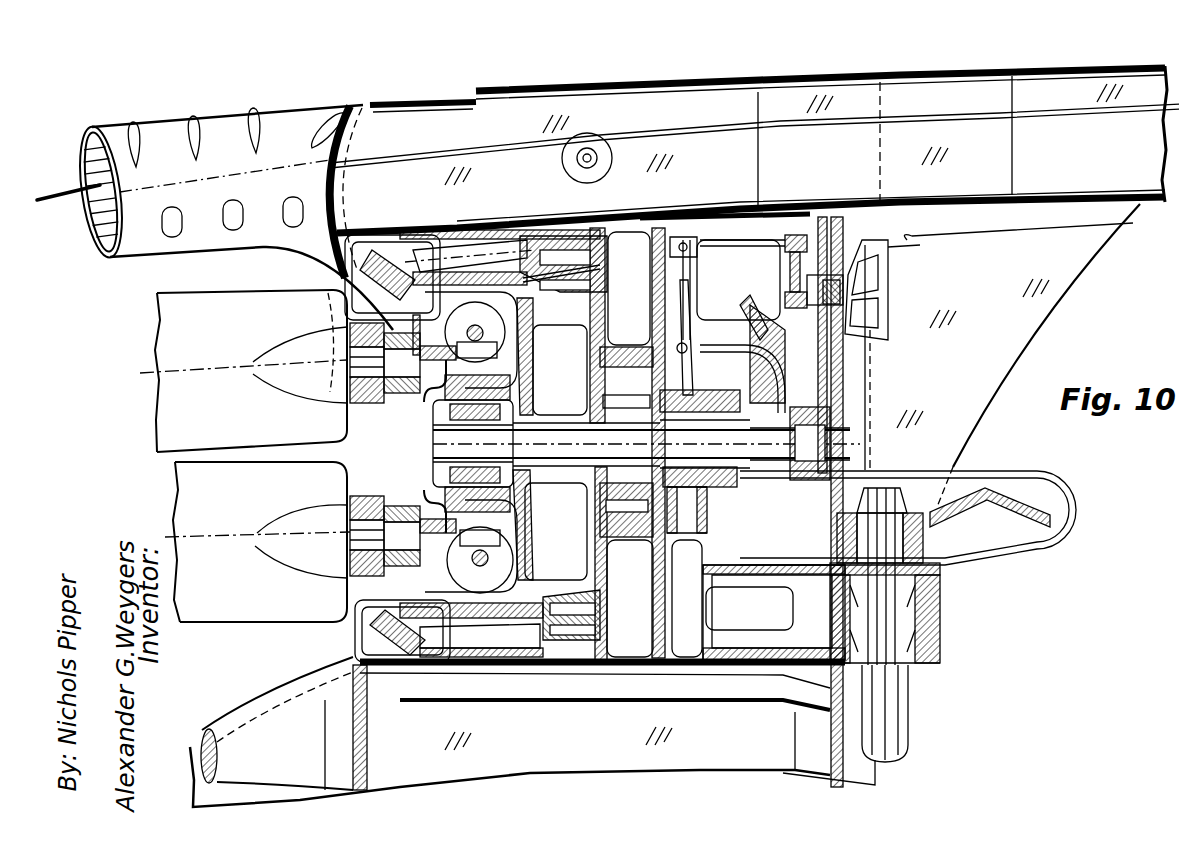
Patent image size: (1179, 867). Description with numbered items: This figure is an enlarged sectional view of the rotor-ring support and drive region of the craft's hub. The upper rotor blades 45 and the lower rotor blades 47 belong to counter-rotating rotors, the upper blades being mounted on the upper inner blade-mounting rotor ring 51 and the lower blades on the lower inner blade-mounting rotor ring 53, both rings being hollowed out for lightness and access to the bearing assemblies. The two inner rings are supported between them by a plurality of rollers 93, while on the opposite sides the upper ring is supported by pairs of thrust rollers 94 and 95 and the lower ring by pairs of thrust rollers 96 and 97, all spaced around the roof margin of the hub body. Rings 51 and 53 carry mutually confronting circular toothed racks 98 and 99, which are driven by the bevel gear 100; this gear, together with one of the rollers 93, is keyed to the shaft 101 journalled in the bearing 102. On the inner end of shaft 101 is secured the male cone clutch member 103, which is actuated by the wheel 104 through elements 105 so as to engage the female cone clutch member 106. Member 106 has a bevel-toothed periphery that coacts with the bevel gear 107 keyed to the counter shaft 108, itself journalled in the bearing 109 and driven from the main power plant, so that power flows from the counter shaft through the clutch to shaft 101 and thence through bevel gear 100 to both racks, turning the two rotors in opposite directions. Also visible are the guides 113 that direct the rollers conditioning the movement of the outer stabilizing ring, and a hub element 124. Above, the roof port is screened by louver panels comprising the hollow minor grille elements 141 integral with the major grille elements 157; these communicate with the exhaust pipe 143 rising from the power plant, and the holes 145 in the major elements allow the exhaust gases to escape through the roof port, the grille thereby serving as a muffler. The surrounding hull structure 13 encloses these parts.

The fuselage hull 13 is at (428, 228).
The upper rotor blades 45 is at (165, 315).
The lower rotor blades 47 is at (185, 503).
The upper inner blade-mounting rotor ring 51 is at (493, 240).
The lower inner blade-mounting rotor ring 53 is at (520, 627).
The rollers 93 is at (432, 472).
The upper thrust rollers 94 is at (377, 242).
The upper thrust rollers 95 is at (563, 250).
The lower thrust rollers 96 is at (355, 640).
The lower thrust rollers 97 is at (580, 668).
The circular toothed rack 98 is at (604, 308).
The circular toothed rack 99 is at (606, 585).
The bevel gear 100 is at (603, 560).
The shaft 101 is at (432, 440).
The bearing 102 is at (580, 490).
The male cone clutch member 103 is at (683, 490).
The wheel 104 is at (888, 273).
The elements 105 is at (792, 253).
The female cone clutch member 106 is at (737, 343).
The bevel gear 107 is at (745, 565).
The counter shaft 108 is at (905, 718).
The bearing 109 is at (940, 641).
The guides 113 is at (333, 315).
The propeller hub 124 is at (392, 398).
The minor grille elements 141 is at (340, 103).
The exhaust pipe 143 is at (1060, 148).
The holes 145 is at (297, 203).
The major grille elements 157 is at (95, 185).